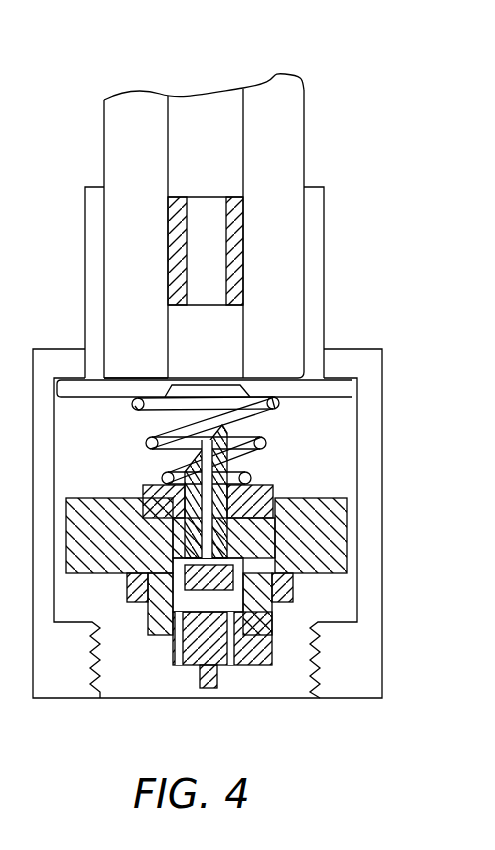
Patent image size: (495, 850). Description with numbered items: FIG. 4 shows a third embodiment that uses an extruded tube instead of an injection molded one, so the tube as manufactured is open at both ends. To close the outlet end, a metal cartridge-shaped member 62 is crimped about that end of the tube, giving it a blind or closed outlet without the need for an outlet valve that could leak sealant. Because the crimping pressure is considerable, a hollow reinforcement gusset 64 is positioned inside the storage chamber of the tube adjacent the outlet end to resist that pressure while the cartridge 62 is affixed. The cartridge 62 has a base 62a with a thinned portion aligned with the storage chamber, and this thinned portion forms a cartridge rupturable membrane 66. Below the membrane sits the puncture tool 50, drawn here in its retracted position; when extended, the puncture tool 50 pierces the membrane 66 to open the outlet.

The hollow reinforcement gusset 64 is at (173, 238).
The cartridge-shaped member 62 is at (324, 233).
The cartridge rupturable membrane 66 is at (203, 375).
The base of cartridge 62a is at (98, 398).
The puncture tool 50 is at (280, 425).